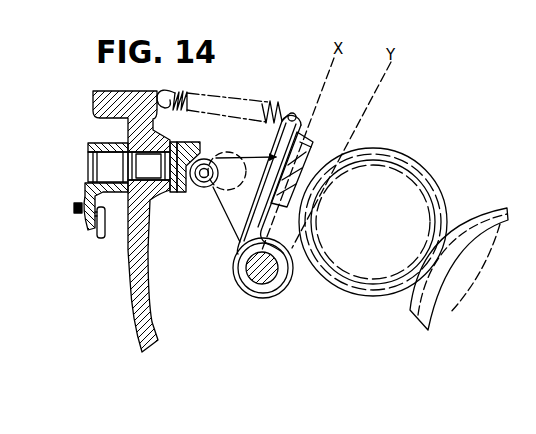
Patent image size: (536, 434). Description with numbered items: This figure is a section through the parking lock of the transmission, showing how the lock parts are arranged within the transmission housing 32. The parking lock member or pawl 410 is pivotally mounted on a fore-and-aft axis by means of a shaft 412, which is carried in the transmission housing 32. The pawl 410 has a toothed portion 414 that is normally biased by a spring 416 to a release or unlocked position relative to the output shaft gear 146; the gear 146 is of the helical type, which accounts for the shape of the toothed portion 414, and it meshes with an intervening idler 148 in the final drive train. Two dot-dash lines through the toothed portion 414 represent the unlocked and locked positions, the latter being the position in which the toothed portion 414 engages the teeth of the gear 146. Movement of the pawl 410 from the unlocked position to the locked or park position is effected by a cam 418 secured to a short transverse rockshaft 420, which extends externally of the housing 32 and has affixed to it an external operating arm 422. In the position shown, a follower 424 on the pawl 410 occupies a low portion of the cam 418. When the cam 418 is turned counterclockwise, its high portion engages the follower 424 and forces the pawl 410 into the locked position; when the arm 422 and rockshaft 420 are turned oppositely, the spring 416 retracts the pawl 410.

The transmission housing 32 is at (131, 332).
The parking lock pawl 410 is at (236, 255).
The shaft 412 is at (261, 270).
The toothed portion 414 is at (302, 149).
The spring 416 is at (267, 106).
The cam 418 is at (198, 142).
The rockshaft 420 is at (100, 165).
The external operating arm 422 is at (87, 232).
The follower 424 is at (197, 186).
The spur gear 146 is at (410, 158).
The idler 148 is at (498, 208).